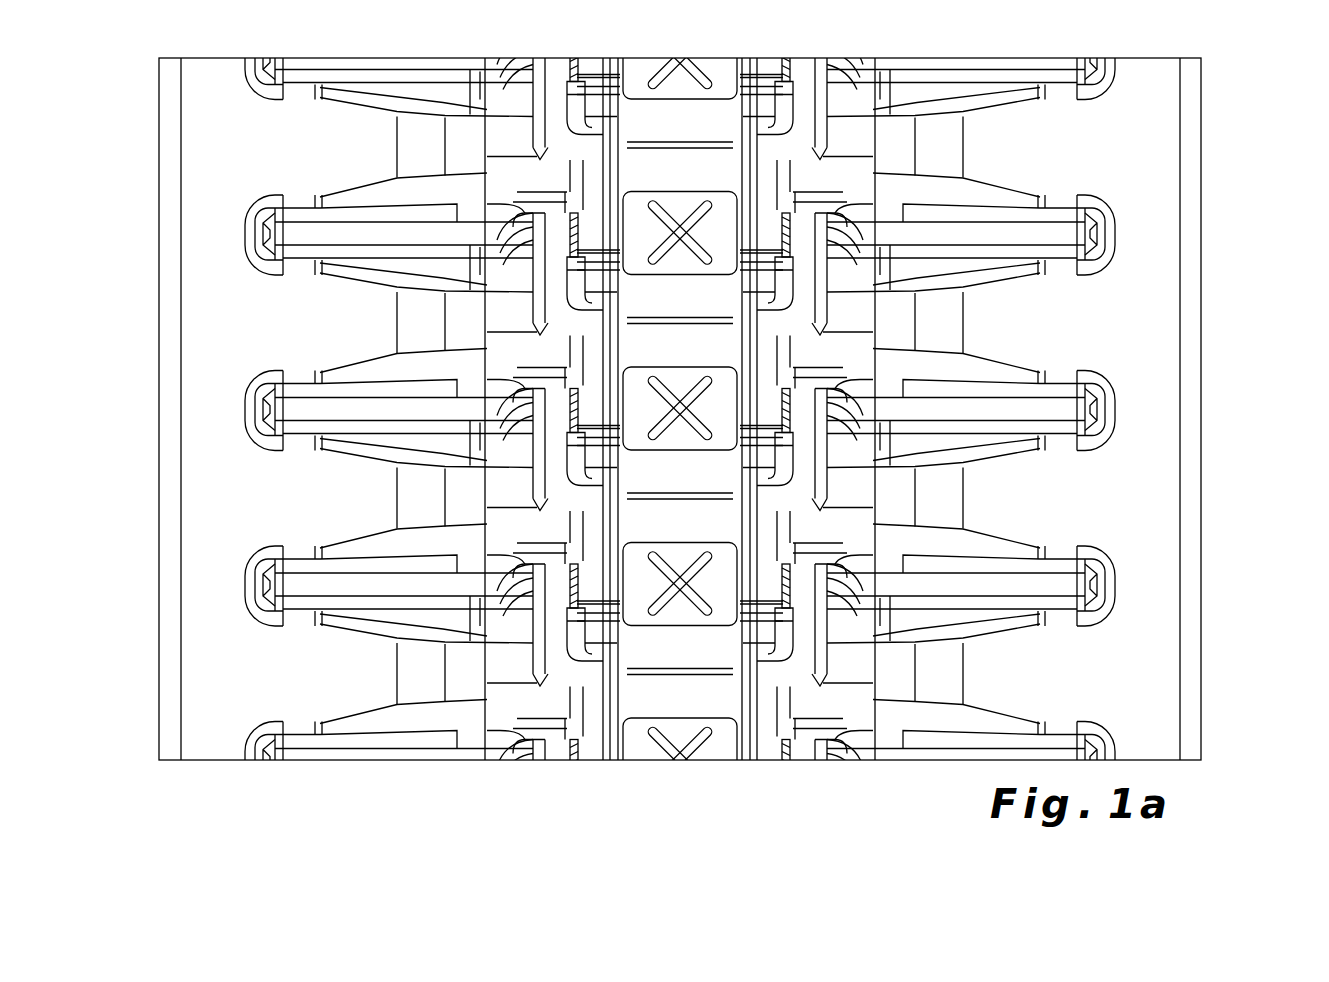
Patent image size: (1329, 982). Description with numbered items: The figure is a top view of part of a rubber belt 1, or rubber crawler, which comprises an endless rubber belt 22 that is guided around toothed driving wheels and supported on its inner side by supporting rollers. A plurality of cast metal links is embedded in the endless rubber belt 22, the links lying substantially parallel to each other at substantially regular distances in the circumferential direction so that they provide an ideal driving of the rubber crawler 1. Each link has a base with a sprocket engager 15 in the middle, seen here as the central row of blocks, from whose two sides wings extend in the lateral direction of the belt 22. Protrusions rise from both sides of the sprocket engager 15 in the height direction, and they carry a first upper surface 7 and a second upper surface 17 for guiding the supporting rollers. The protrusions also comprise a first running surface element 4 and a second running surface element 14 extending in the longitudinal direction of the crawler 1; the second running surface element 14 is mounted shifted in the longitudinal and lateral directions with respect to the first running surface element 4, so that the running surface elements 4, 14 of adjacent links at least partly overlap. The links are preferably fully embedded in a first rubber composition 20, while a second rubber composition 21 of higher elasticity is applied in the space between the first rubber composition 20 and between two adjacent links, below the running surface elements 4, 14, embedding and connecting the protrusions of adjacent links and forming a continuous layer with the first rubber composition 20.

The rubber belt 1 is at (1207, 129).
The endless rubber belt 22 is at (1207, 193).
The first rubber composition 20 is at (1128, 290).
The sprocket engager 15 is at (673, 300).
The second rubber composition 21 is at (577, 397).
The first running surface element 4 is at (566, 438).
The first upper surface 7 is at (600, 518).
The second upper surface 17 is at (815, 500).
The second running surface element 14 is at (608, 580).